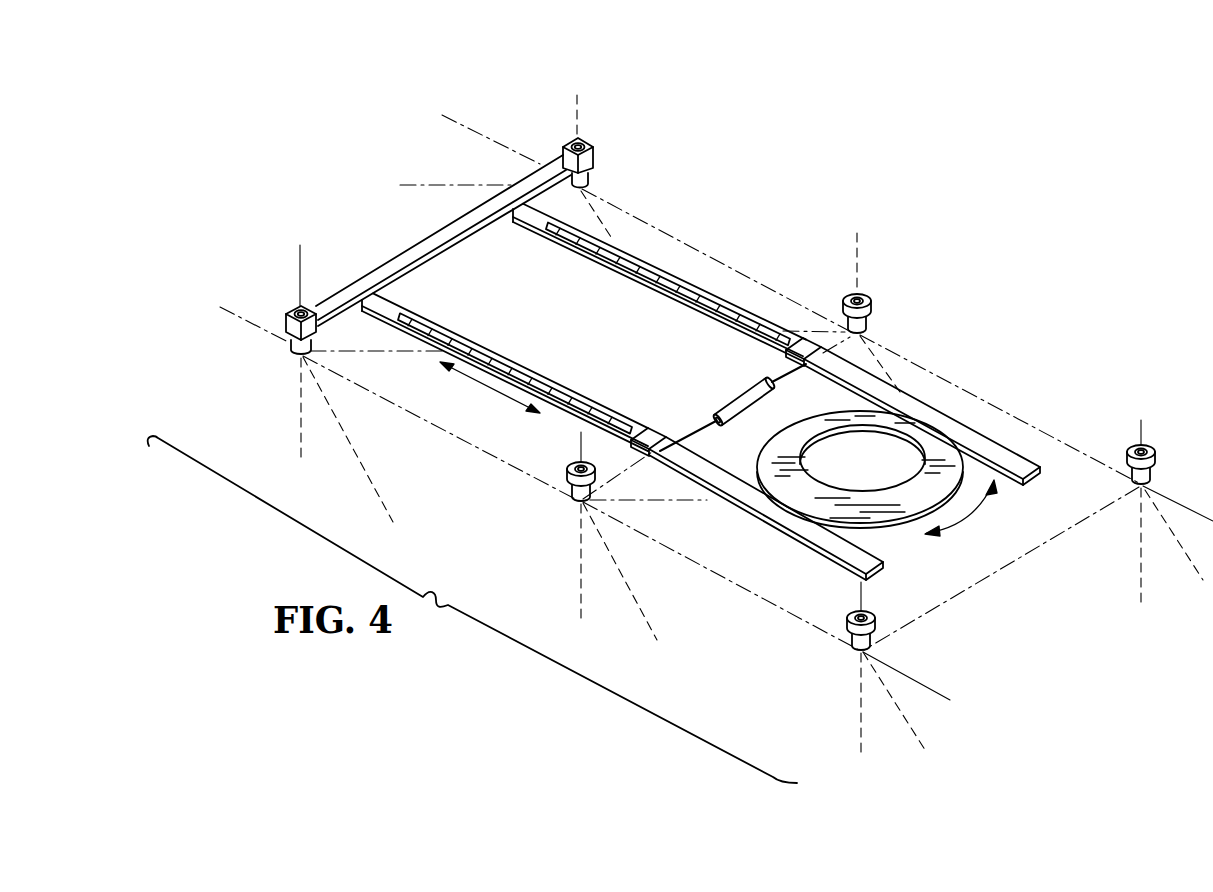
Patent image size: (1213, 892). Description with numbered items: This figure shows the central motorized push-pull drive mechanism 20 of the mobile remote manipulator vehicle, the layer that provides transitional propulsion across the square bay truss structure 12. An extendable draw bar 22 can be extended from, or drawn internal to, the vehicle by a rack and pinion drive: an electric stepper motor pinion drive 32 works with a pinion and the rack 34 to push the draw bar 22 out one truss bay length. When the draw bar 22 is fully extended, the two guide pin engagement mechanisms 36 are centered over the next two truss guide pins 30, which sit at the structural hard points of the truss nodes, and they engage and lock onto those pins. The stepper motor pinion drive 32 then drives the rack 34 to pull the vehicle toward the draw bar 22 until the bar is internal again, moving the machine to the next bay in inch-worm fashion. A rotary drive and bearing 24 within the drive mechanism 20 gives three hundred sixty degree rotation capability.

The sheet material 12 is at (580, 562).
The layout assembly 20 is at (995, 322).
The main beam 22 is at (421, 243).
The rotatable ring template 24 is at (837, 408).
The locating posts 30 is at (291, 352).
The connecting link cylinder 32 is at (739, 393).
The slotted rails 34 is at (647, 272).
The block 36 is at (591, 137).